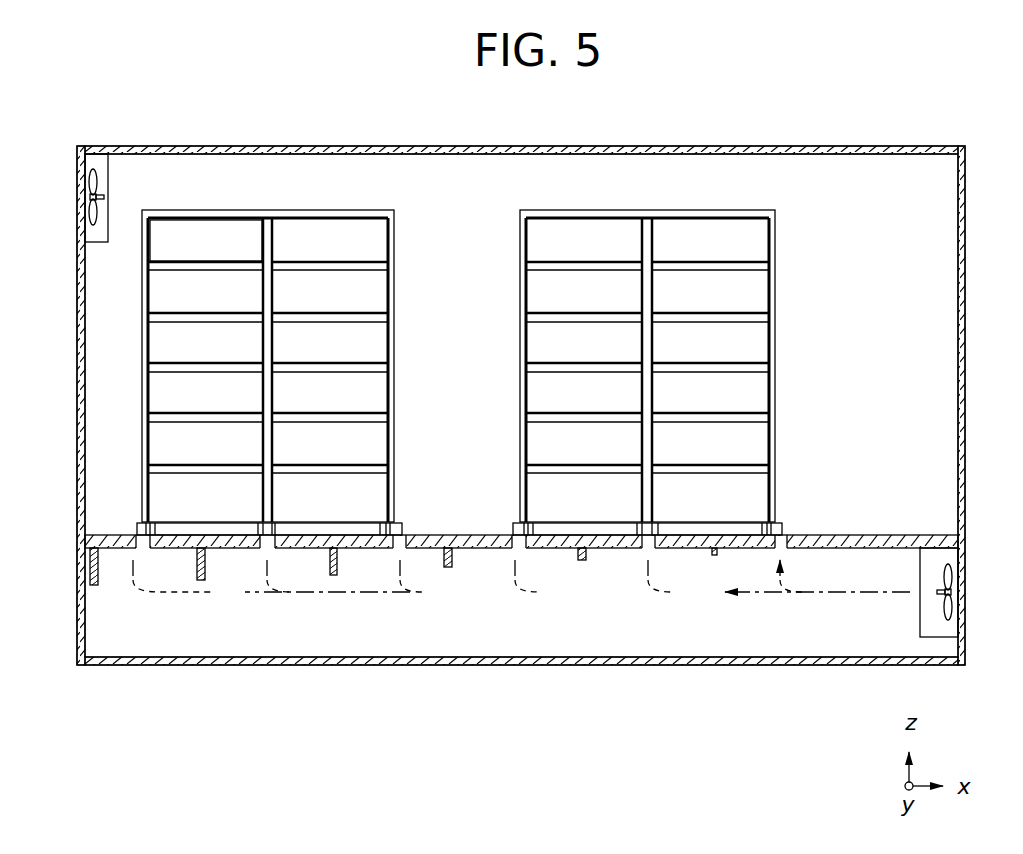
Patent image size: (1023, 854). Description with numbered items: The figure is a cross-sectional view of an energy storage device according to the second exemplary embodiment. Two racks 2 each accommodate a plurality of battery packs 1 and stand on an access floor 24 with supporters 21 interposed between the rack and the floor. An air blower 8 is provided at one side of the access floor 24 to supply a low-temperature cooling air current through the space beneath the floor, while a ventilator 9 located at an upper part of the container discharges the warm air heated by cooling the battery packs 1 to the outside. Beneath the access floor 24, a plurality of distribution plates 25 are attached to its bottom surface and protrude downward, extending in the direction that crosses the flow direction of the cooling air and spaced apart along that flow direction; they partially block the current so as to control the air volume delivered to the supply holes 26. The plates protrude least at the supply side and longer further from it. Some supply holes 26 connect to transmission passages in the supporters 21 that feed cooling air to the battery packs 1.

The battery pack 1 is at (182, 236).
The rack 2 is at (325, 215).
The air blower 8 is at (952, 578).
The ventilator 9 is at (90, 179).
The supporter 21 is at (137, 526).
The access floor 24 is at (903, 541).
The distribution plate 25 is at (582, 562).
The supply hole 26 is at (401, 538).